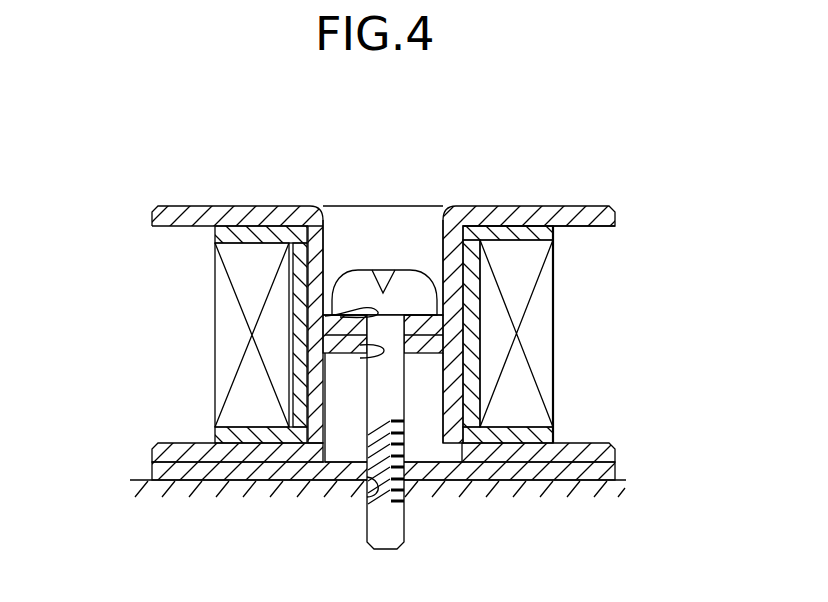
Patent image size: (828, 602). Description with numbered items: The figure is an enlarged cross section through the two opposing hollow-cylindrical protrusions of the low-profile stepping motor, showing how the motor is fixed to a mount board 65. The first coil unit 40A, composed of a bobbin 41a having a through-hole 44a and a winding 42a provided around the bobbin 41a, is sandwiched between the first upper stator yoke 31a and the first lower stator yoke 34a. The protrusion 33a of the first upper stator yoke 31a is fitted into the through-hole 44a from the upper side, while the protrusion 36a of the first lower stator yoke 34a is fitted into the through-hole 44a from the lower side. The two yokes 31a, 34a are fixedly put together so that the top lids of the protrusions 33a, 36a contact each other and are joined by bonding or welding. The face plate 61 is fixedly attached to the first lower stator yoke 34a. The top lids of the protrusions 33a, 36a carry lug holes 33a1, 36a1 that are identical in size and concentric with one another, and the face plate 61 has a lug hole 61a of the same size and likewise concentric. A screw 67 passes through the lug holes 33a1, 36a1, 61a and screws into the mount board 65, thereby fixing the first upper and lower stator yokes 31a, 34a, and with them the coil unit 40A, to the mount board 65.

The first upper stator yoke 31a is at (540, 214).
The protrusion 33a is at (373, 227).
The through-hole 44a is at (350, 228).
The bobbin 41a is at (215, 232).
The winding 42a is at (227, 332).
The lug hole 33a1 is at (325, 316).
The lug hole 36a1 is at (360, 358).
The protrusion 36a is at (423, 420).
The first lower stator yoke 34a is at (570, 450).
The face plate 61 is at (248, 480).
The lug hole 61a is at (386, 490).
The mount board 65 is at (182, 490).
The screw 67 is at (405, 532).
The first coil unit 40A is at (584, 367).